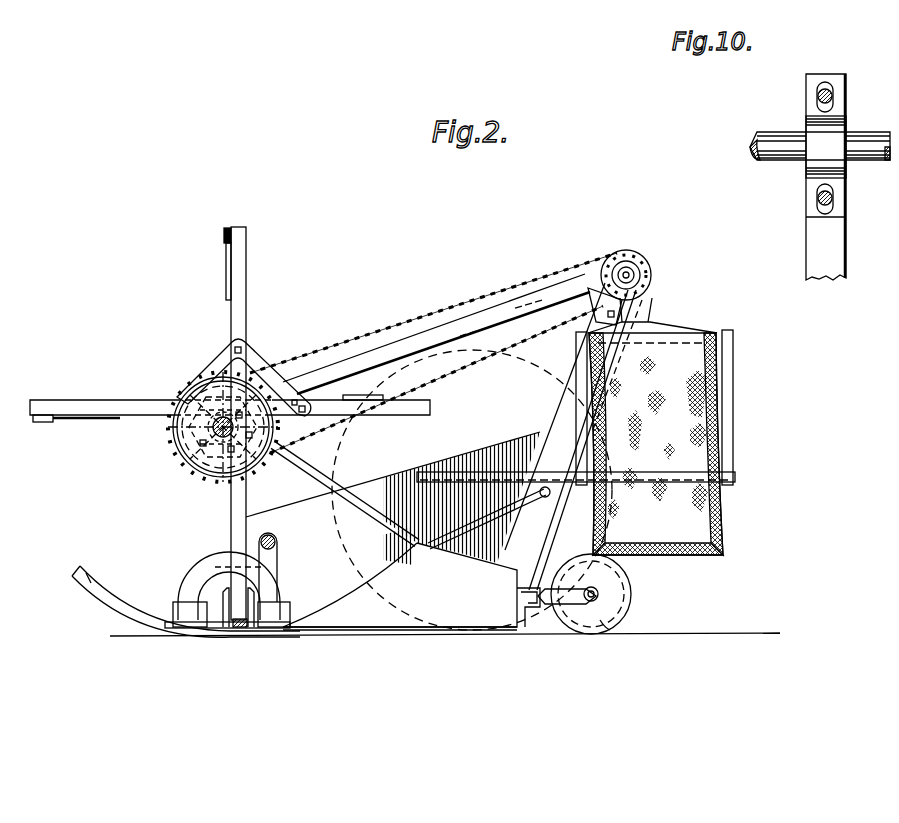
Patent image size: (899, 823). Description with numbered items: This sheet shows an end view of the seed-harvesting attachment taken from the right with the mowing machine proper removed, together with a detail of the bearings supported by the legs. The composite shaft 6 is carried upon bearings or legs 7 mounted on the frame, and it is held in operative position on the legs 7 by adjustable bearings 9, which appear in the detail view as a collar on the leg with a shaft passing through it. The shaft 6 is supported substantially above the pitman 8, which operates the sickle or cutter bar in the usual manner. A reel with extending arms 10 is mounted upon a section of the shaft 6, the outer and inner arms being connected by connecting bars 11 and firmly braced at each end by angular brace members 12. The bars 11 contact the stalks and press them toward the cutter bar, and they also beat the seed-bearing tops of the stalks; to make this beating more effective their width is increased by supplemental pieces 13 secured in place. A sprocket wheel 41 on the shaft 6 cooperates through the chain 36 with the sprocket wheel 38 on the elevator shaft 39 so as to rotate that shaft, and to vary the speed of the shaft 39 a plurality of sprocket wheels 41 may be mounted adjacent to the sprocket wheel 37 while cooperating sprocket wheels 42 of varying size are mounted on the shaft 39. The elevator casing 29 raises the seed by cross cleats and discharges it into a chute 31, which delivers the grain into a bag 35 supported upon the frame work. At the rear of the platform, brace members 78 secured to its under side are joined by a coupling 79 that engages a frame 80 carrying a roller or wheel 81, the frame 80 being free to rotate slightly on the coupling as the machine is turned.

In FIG. 2, the composite shaft 6 is at (212, 428).
In FIG. 10, the composite shaft 6 is at (884, 159).
In FIG. 10, the legs 7 is at (840, 255).
In FIG. 2, the pitman 8 is at (240, 630).
In FIG. 2, the adjustable bearings 9 is at (172, 454).
In FIG. 10, the adjustable bearings 9 is at (847, 122).
In FIG. 2, the reel arms 10 is at (247, 300).
In FIG. 2, the connecting bars 11 is at (233, 227).
In FIG. 2, the angular brace members 12 is at (262, 356).
In FIG. 2, the supplemental pieces 13 is at (226, 270).
In FIG. 2, the elevator casing 29 is at (552, 510).
In FIG. 2, the chute 31 is at (650, 312).
In FIG. 2, the bag 35 is at (718, 498).
In FIG. 2, the chain 36 is at (462, 312).
In FIG. 2, the sprocket wheel 37 is at (208, 480).
In FIG. 2, the upper sprocket 38 is at (628, 258).
In FIG. 2, the elevator shaft 39 is at (638, 262).
In FIG. 2, the sprocket wheel 41 is at (185, 470).
In FIG. 2, the cooperating sprocket wheels 42 is at (640, 274).
In FIG. 2, the brace members 78 is at (410, 635).
In FIG. 2, the coupling 79 is at (538, 610).
In FIG. 2, the frame 80 is at (548, 575).
In FIG. 2, the wheel 81 is at (612, 625).